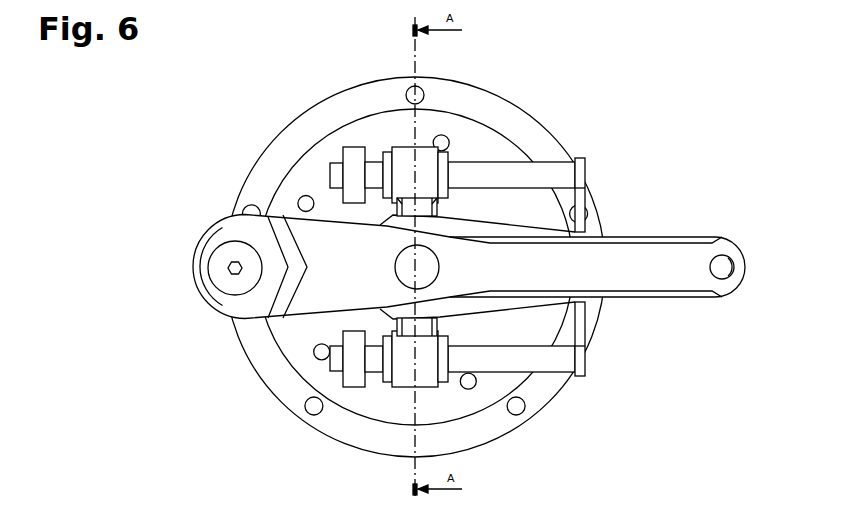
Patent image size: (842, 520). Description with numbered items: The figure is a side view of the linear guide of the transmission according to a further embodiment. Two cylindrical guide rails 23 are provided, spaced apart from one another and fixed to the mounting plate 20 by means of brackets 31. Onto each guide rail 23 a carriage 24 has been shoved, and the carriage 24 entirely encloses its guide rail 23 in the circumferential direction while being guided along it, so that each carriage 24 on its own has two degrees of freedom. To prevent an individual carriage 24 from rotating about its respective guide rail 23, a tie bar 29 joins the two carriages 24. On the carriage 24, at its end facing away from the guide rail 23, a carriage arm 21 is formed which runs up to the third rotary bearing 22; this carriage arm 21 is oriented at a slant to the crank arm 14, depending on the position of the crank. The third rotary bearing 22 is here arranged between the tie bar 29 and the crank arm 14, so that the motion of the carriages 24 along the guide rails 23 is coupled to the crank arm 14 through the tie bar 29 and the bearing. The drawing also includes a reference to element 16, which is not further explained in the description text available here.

The crank arm 14 is at (690, 273).
The chainring carrier 16 is at (598, 156).
The mounting plate 20 is at (400, 407).
The carriage arm 21 is at (393, 261).
The third rotary bearing 22 is at (398, 267).
The guide rail 23 is at (562, 172).
The carriage 24 is at (430, 155).
The tie bar 29 is at (397, 213).
The bracket 31 is at (349, 160).